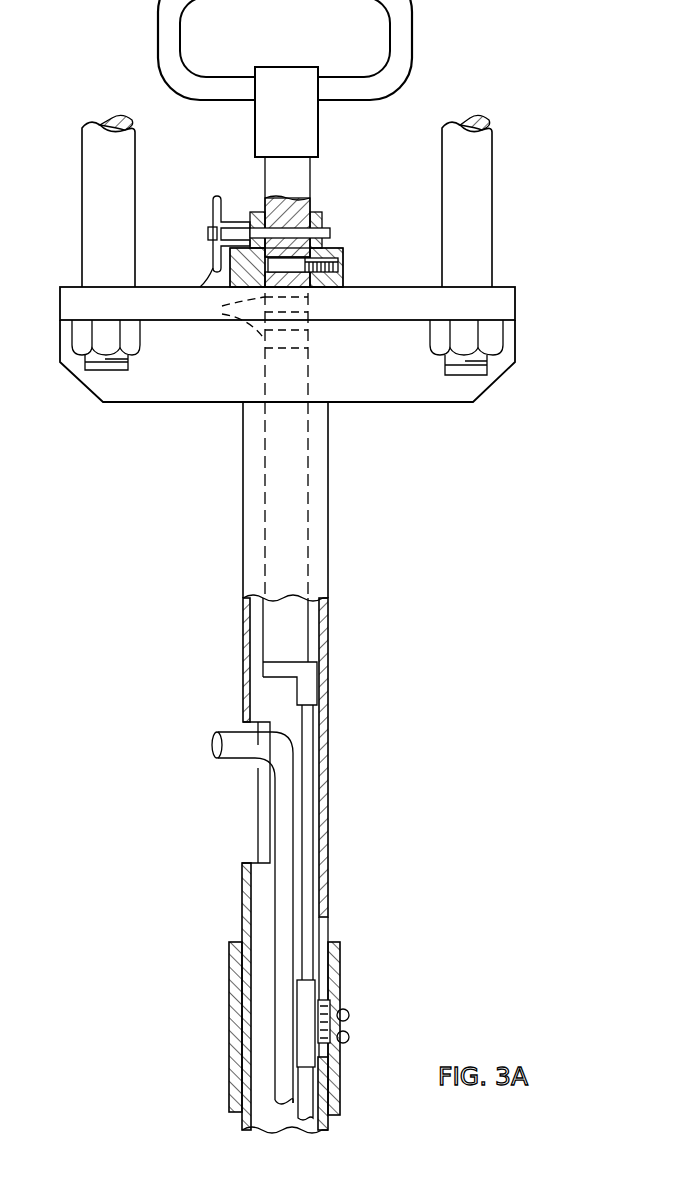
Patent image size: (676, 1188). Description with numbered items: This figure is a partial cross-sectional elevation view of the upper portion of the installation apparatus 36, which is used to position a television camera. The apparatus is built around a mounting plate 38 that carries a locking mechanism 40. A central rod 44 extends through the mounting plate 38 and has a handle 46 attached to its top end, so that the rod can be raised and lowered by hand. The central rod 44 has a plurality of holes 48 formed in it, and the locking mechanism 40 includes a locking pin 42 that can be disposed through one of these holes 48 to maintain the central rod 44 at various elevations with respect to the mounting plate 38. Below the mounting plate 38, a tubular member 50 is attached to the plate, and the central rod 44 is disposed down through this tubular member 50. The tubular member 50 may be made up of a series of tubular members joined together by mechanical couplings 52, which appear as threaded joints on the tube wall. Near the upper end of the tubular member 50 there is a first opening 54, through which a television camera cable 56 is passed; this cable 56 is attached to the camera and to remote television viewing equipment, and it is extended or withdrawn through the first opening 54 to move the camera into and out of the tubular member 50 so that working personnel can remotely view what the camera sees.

The installation apparatus 36 is at (241, 616).
The mounting plate 38 is at (502, 312).
The locking mechanism 40 is at (205, 232).
The locking pin 42 is at (330, 233).
The central rod 44 is at (293, 175).
The handle 46 is at (400, 24).
The holes 48 is at (290, 265).
The tubular member 50 is at (323, 773).
The mechanical couplings 52 is at (237, 990).
The first opening 54 is at (252, 860).
The television camera cable 56 is at (227, 728).